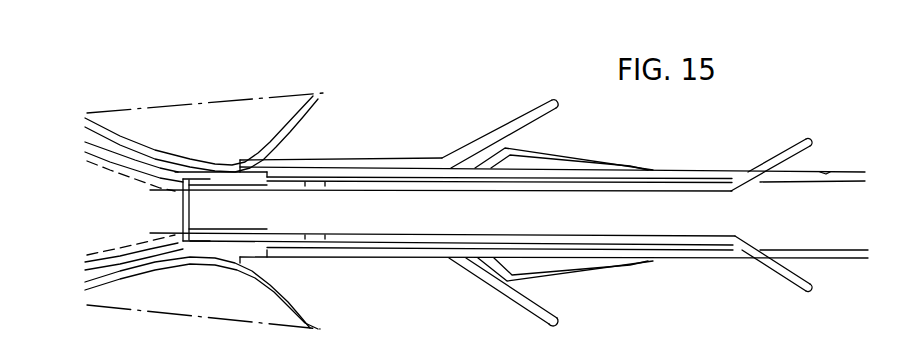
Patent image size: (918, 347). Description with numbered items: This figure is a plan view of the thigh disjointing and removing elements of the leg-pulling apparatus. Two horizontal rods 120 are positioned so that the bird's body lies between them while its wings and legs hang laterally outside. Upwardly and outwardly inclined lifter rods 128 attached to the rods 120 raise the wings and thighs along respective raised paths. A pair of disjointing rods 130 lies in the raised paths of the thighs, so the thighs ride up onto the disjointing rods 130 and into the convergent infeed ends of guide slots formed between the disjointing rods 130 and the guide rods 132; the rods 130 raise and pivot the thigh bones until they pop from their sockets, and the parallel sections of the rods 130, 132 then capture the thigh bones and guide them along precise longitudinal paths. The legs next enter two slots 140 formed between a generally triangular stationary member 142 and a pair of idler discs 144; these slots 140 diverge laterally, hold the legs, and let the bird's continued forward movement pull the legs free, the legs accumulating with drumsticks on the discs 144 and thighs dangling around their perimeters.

The horizontal rods 120 is at (413, 176).
The lifter rods 128 is at (612, 160).
The disjointing rods 130 is at (379, 163).
The guide rods 132 is at (490, 181).
The slots 140 is at (201, 212).
The stationary member 142 is at (162, 214).
The idler discs 144 is at (201, 136).